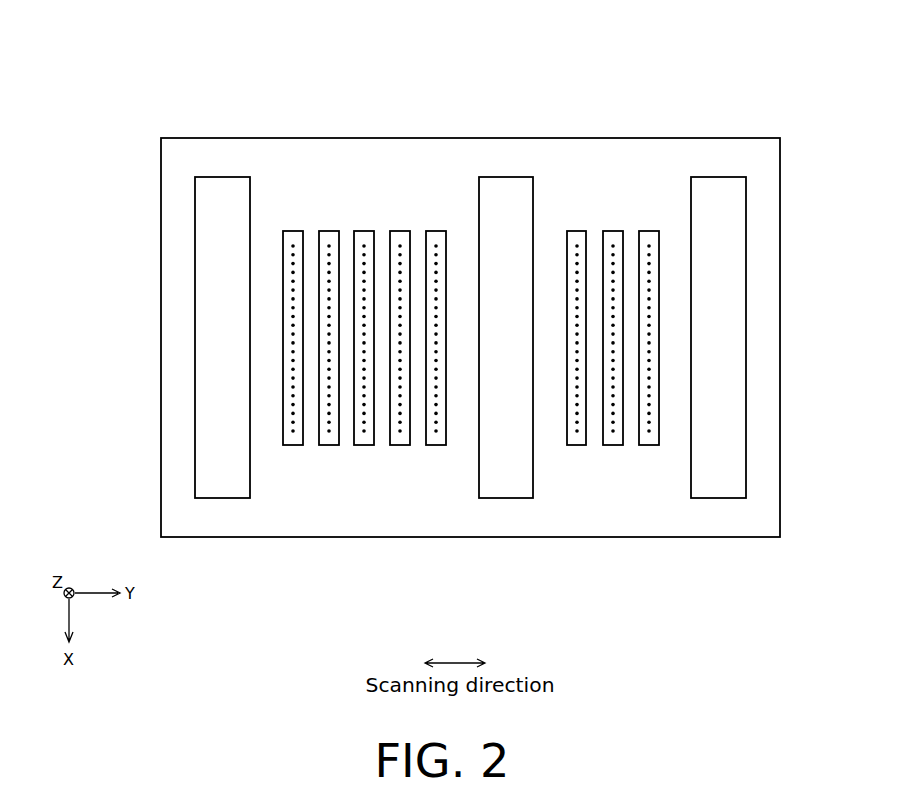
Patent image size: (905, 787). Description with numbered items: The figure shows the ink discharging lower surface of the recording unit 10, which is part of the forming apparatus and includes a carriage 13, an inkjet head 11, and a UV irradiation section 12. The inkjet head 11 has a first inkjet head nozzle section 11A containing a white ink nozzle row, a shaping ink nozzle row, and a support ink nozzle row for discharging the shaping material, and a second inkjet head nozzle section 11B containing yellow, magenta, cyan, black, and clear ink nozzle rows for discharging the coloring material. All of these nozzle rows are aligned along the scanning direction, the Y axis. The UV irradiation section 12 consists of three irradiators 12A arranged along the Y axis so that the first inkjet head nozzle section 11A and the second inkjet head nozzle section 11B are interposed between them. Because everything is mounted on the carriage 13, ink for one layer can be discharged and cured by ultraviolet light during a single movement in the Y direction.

The recording unit 10 is at (777, 56).
The inkjet head 11 is at (471, 252).
The first inkjet head nozzle section 11A is at (613, 270).
The second inkjet head nozzle section 11B is at (283, 200).
The UV irradiation section 12 is at (470, 398).
The irradiator 12A is at (743, 580).
The carriage 13 is at (780, 170).